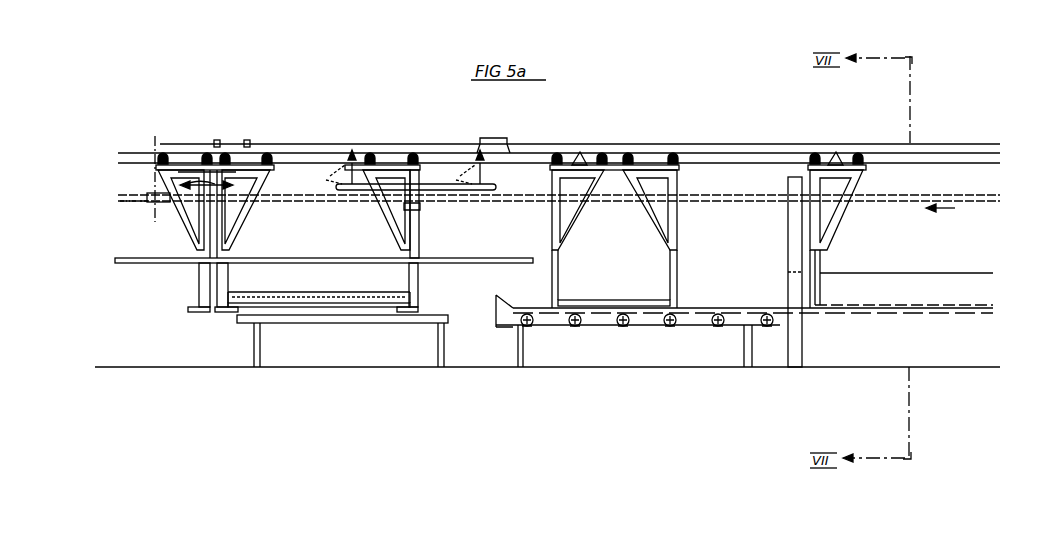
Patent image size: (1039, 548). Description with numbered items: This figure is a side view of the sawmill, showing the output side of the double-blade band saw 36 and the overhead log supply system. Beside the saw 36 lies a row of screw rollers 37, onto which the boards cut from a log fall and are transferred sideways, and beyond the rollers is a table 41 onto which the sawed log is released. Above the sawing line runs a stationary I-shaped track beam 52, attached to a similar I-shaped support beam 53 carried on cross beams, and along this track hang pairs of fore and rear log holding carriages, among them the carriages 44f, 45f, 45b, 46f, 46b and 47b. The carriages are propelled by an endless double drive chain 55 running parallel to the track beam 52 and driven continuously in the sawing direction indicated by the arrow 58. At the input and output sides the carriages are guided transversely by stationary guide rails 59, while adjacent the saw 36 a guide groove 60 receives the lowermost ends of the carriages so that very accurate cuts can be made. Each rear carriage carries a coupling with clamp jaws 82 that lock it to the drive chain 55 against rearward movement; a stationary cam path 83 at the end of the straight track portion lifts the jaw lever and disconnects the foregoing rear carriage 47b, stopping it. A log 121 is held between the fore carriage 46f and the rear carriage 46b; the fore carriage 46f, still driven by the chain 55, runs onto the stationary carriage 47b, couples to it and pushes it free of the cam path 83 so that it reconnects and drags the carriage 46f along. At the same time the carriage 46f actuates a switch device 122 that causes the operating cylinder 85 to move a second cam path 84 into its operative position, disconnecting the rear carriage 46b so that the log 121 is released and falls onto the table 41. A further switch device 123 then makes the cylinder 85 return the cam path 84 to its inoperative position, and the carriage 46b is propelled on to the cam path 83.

The double-blade band saw 36 is at (790, 250).
The screw rollers 37 is at (620, 327).
The table 41 is at (424, 319).
The fore log holding carriage 44f is at (840, 222).
The fore log holding carriage 45f is at (570, 251).
The rear log holding carriage 45b is at (661, 247).
The fore log holding carriage 46f is at (243, 236).
The rear log holding carriage 46b is at (396, 229).
The rear log holding carriage 47b is at (203, 246).
The track beam 52 is at (945, 164).
The support beam 53 is at (953, 147).
The double-chain 55 is at (903, 195).
The arrow 58 is at (935, 210).
The guide rails 59 is at (428, 258).
The guide groove 60 is at (992, 312).
The clamp jaws 82 is at (165, 190).
The cam path 83 is at (205, 183).
The cam path 84 is at (447, 191).
The operating cylinder 85 is at (494, 138).
The log 121 is at (343, 290).
The switch device 122 is at (247, 140).
The switch device 123 is at (220, 128).